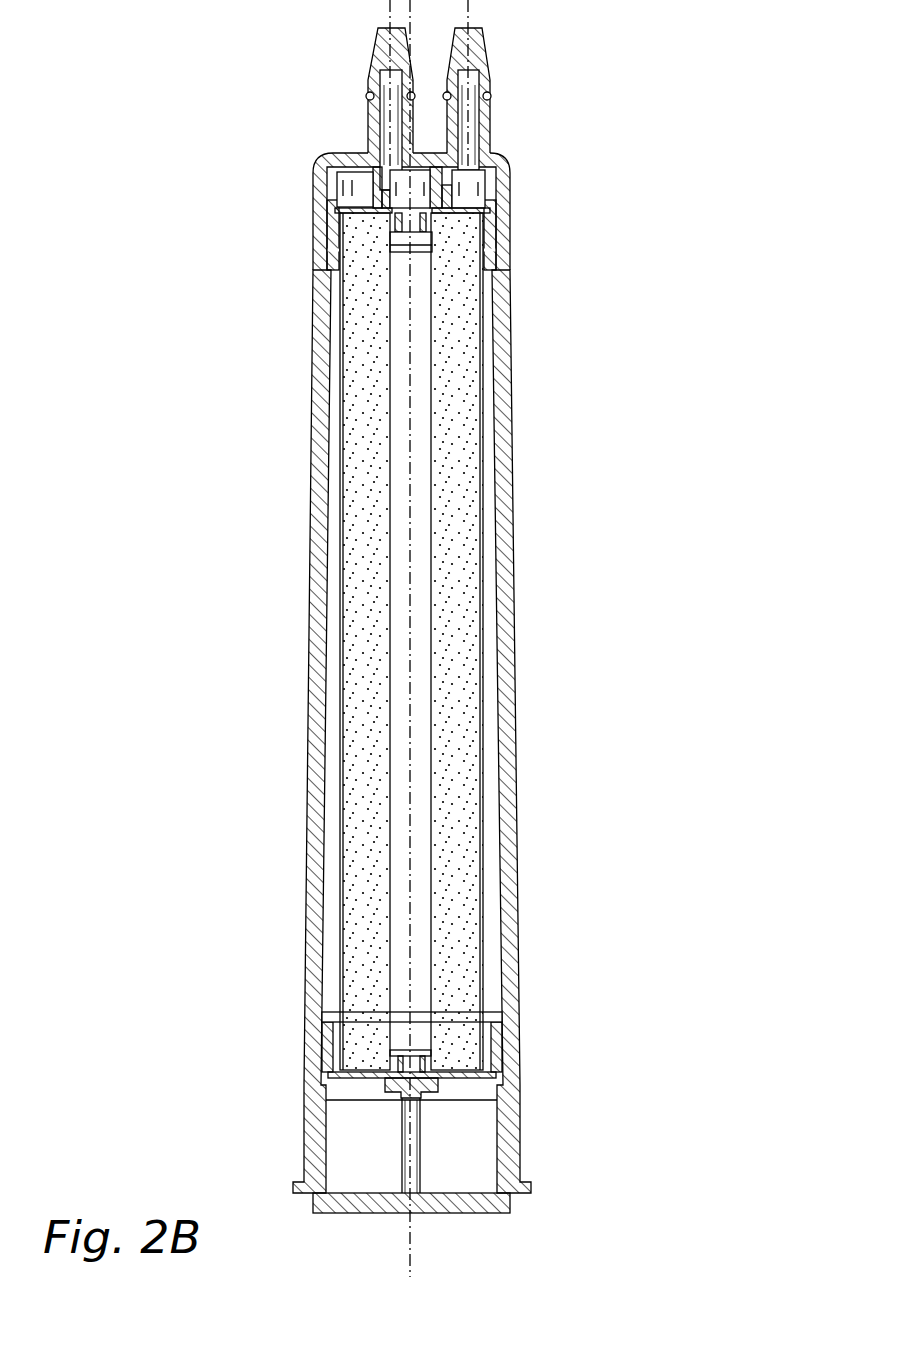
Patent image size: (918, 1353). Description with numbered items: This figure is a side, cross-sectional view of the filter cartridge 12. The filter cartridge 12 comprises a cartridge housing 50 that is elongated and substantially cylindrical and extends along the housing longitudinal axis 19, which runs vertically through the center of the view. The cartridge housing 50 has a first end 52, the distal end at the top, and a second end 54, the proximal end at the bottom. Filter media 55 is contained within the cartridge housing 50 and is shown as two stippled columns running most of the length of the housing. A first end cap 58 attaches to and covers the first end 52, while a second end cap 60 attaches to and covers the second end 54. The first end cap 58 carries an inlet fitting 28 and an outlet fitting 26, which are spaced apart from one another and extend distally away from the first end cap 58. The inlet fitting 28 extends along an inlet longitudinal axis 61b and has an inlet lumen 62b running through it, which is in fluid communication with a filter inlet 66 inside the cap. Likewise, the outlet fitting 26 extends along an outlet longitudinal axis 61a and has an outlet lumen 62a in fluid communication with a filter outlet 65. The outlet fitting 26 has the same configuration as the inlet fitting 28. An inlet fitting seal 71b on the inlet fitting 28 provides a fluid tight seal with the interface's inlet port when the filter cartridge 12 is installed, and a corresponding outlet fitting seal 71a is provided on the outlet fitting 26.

The filter cartridge 12 is at (205, 431).
The housing longitudinal axis 19 is at (412, 1257).
The outlet fitting 26 is at (491, 125).
The inlet fitting 28 is at (371, 117).
The cartridge housing 50 is at (512, 508).
The first end 52 is at (512, 280).
The second end 54 is at (512, 1013).
The filter media 55 is at (352, 697).
The first end cap 58 is at (503, 175).
The second end cap 60 is at (510, 1142).
The outlet longitudinal axis 61a is at (470, 12).
The inlet longitudinal axis 61b is at (389, 12).
The outlet lumen 62a is at (470, 117).
The inlet lumen 62b is at (383, 133).
The filter outlet 65 is at (470, 190).
The filter inlet 66 is at (397, 225).
The outlet fitting seal 71a is at (367, 93).
The inlet fitting seal 71b is at (490, 93).